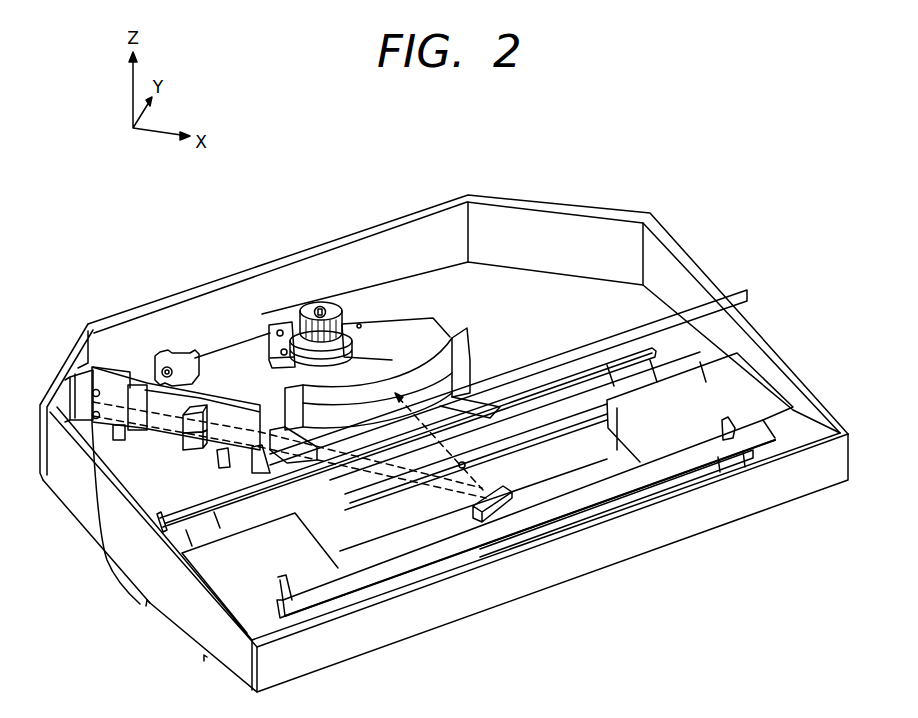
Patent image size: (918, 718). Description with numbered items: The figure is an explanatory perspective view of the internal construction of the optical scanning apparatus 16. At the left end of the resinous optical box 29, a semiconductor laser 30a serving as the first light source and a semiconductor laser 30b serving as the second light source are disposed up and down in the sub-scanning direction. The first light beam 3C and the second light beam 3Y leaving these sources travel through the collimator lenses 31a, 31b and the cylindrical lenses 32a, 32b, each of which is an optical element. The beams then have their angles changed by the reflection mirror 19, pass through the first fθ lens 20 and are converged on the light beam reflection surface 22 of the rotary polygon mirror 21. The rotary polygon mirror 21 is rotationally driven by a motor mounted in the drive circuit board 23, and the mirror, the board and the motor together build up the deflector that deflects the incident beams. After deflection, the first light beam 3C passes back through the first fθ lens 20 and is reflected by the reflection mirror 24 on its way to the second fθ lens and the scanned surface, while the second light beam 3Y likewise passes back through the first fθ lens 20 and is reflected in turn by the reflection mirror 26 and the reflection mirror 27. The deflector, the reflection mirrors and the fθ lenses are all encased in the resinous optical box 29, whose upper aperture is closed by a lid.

The optical scanning apparatus 16 is at (582, 192).
The resinous optical box 29 is at (832, 472).
The reflection mirror 27 is at (652, 348).
The reflection mirror 24 is at (703, 460).
The reflection mirror 26 is at (590, 462).
The reflection mirror 19 is at (510, 507).
The first fθ lens 20 is at (462, 352).
The drive circuit board 23 is at (400, 337).
The rotary polygon mirror 21 is at (327, 307).
The light beam reflection surface 22 is at (337, 323).
The second light beam 3Y is at (137, 370).
The first light beam 3C is at (113, 395).
The semiconductor laser 30a is at (100, 412).
The semiconductor laser 30b is at (106, 372).
The collimator lens 31a is at (132, 372).
The collimator lens 31b is at (142, 372).
The cylindrical lens 32a is at (187, 447).
The cylindrical lens 32b is at (205, 405).